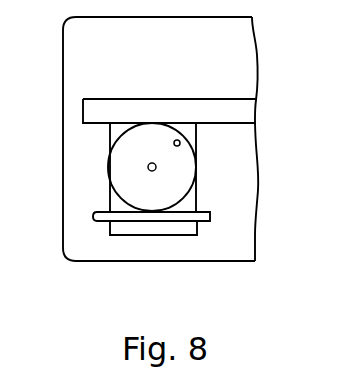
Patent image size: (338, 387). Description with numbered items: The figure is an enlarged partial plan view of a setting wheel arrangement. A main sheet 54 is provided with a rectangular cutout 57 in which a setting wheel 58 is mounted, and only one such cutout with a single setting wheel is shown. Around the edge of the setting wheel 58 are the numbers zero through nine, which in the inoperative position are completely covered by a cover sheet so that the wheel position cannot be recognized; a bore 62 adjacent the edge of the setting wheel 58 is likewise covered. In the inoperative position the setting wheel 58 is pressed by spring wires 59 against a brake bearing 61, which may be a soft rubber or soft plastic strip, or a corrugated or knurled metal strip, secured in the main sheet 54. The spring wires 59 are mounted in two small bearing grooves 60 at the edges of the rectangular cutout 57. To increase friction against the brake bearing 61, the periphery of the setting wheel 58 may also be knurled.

The main sheet 54 is at (240, 53).
The brake bearing 61 is at (248, 112).
The bore 62 is at (180, 143).
The setting wheel 58 is at (173, 172).
The bearing grooves 60 is at (102, 225).
The cutouts 57 is at (157, 230).
The spring wires 59 is at (187, 215).